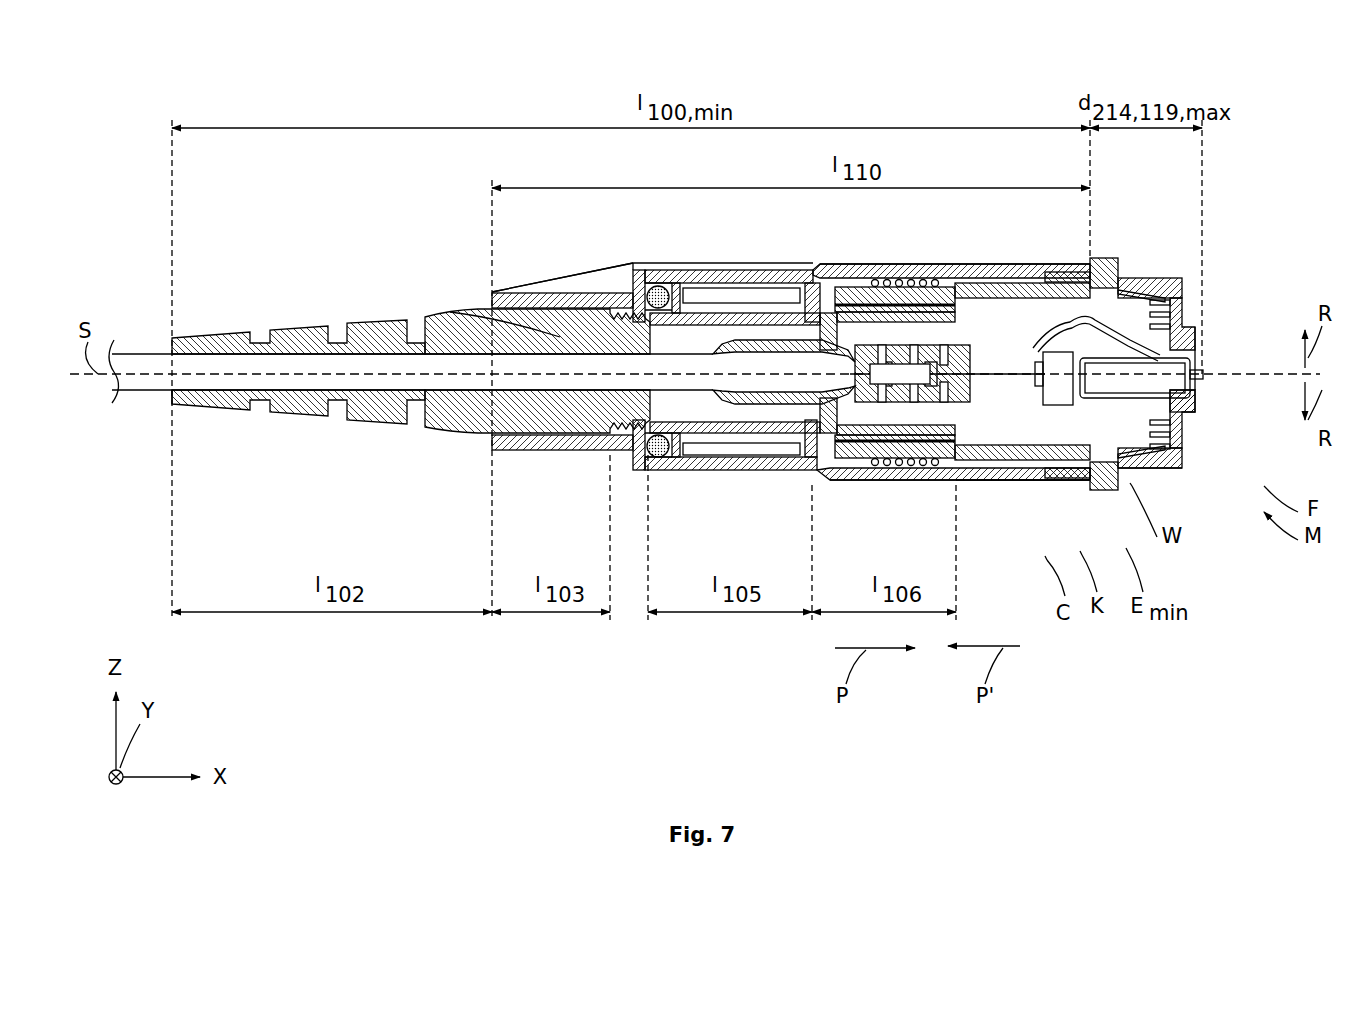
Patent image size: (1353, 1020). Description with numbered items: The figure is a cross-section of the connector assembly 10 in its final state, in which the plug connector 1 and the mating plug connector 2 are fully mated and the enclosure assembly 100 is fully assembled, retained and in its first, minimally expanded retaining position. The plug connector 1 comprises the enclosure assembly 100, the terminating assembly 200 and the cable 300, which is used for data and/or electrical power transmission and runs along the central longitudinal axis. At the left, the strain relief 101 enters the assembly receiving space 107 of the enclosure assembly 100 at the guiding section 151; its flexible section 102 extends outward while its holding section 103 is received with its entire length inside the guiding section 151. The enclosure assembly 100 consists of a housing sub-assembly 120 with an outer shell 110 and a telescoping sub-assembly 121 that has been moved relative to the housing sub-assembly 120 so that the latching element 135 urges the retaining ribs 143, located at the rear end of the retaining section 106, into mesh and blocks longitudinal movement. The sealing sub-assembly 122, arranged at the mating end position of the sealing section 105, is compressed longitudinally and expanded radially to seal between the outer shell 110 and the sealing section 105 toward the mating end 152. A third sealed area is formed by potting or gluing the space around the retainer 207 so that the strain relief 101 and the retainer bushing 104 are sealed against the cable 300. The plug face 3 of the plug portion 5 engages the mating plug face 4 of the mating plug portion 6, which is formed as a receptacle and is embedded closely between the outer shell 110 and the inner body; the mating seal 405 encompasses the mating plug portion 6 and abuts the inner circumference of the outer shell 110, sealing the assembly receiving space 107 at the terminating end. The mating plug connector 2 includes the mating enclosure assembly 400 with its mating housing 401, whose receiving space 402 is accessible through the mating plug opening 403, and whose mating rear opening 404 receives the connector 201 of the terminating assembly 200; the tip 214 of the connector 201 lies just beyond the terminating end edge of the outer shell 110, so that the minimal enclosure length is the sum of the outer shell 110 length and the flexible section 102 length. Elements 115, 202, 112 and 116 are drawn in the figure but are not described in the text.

The cable 300 is at (140, 350).
The mating end 152 is at (170, 400).
The strain relief 101 is at (366, 314).
The flexible section 102 is at (370, 426).
The holding section 103 is at (460, 317).
The guiding section 151 is at (545, 438).
The housing sub-assembly 120 is at (486, 290).
The outer shell 110 is at (567, 271).
The sealing section 105 is at (703, 430).
The sealing sub-assembly 122 is at (661, 453).
The latching element 135 is at (812, 299).
The retainer 207 is at (753, 399).
The retaining section 106 is at (940, 463).
The retaining ribs 143 is at (847, 298).
The spring 115 is at (907, 277).
The contact pin 202 is at (908, 331).
The contact carrier 112 is at (997, 304).
The mating plug face 4 is at (1040, 302).
The mating plug portion 6 is at (1020, 467).
The mating plug opening 403 is at (1065, 304).
The mating seal 405 is at (1063, 269).
The receiving space 402 is at (1113, 256).
The mating enclosure assembly 400 is at (1139, 273).
The plug portion 5 is at (1174, 284).
The mating housing 401 is at (1166, 296).
The contact spring 116 is at (1062, 318).
The retainer bushing 104 is at (967, 422).
The telescoping sub-assembly 121 is at (996, 424).
The terminating assembly 200 is at (1197, 351).
The tip 214 is at (1205, 376).
The connector 201 is at (1196, 396).
The plug face 3 is at (1233, 420).
The mating rear opening 404 is at (1179, 415).
The assembly receiving space 107 is at (1163, 468).
The mating plug connector 2 is at (1136, 481).
The plug connector 1 is at (972, 560).
The enclosure assembly 100 is at (1003, 555).
The connector assembly 10 is at (1264, 542).